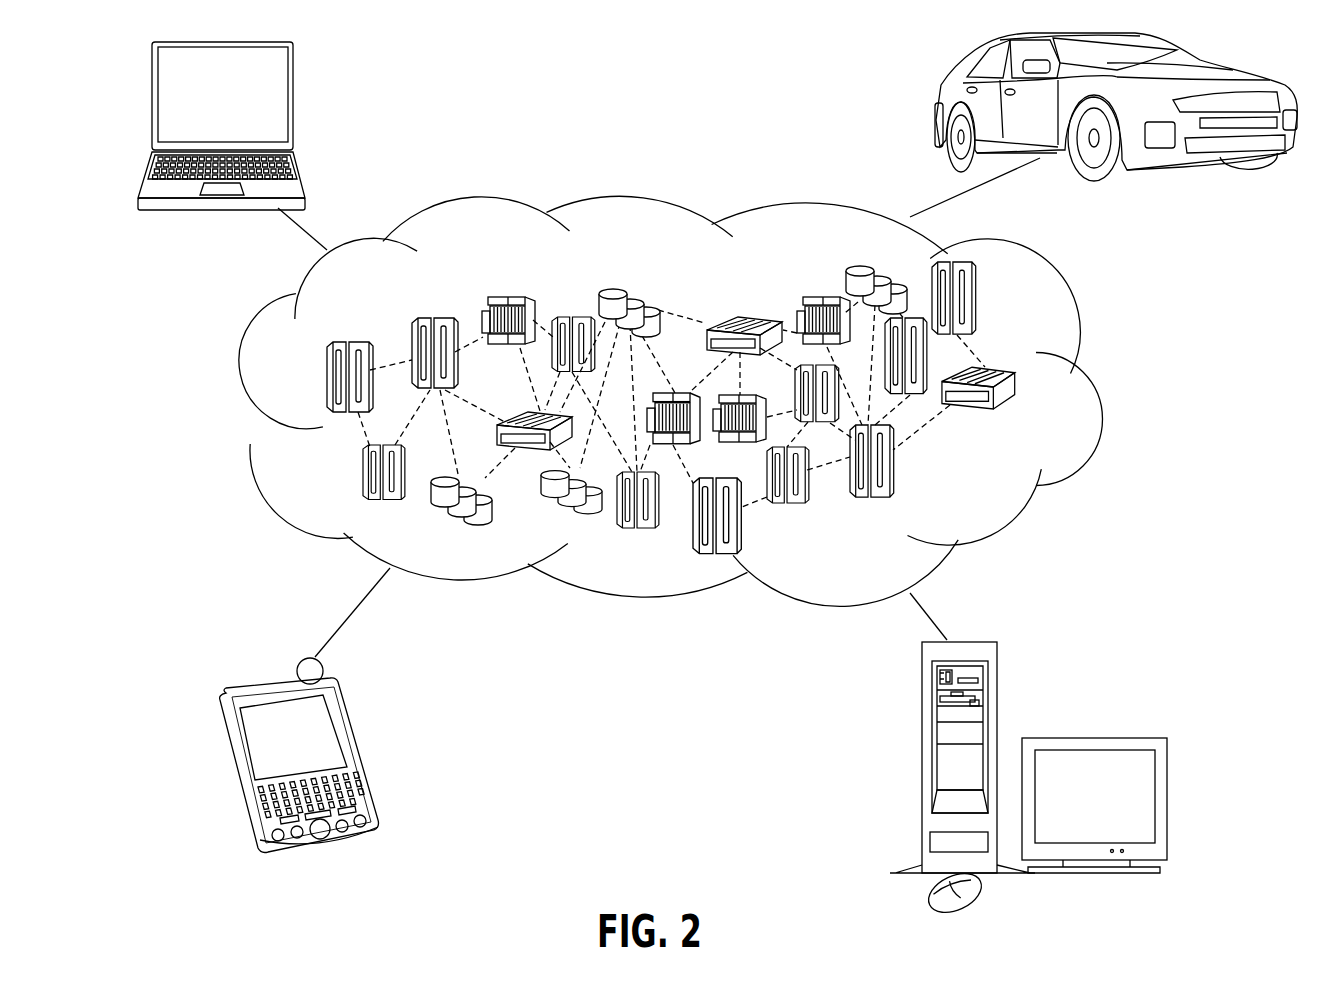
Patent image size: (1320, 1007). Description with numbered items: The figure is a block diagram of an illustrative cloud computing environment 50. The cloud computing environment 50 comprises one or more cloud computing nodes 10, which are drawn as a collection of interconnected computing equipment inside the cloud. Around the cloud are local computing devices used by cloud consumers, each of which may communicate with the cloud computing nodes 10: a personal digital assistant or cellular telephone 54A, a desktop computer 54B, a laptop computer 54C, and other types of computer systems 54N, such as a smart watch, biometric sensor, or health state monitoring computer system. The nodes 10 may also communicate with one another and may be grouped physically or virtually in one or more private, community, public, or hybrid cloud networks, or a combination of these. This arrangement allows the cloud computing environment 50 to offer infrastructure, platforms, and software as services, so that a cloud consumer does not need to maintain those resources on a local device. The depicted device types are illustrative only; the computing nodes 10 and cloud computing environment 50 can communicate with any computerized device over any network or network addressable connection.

The cloud computing environment 50 is at (1090, 387).
The cloud computing nodes 10 is at (1000, 490).
The personal digital assistant (PDA) or cellular telephone 54A is at (345, 719).
The desktop computer 54B is at (921, 703).
The laptop computer 54C is at (294, 78).
The other type of computer systems 54N is at (943, 92).